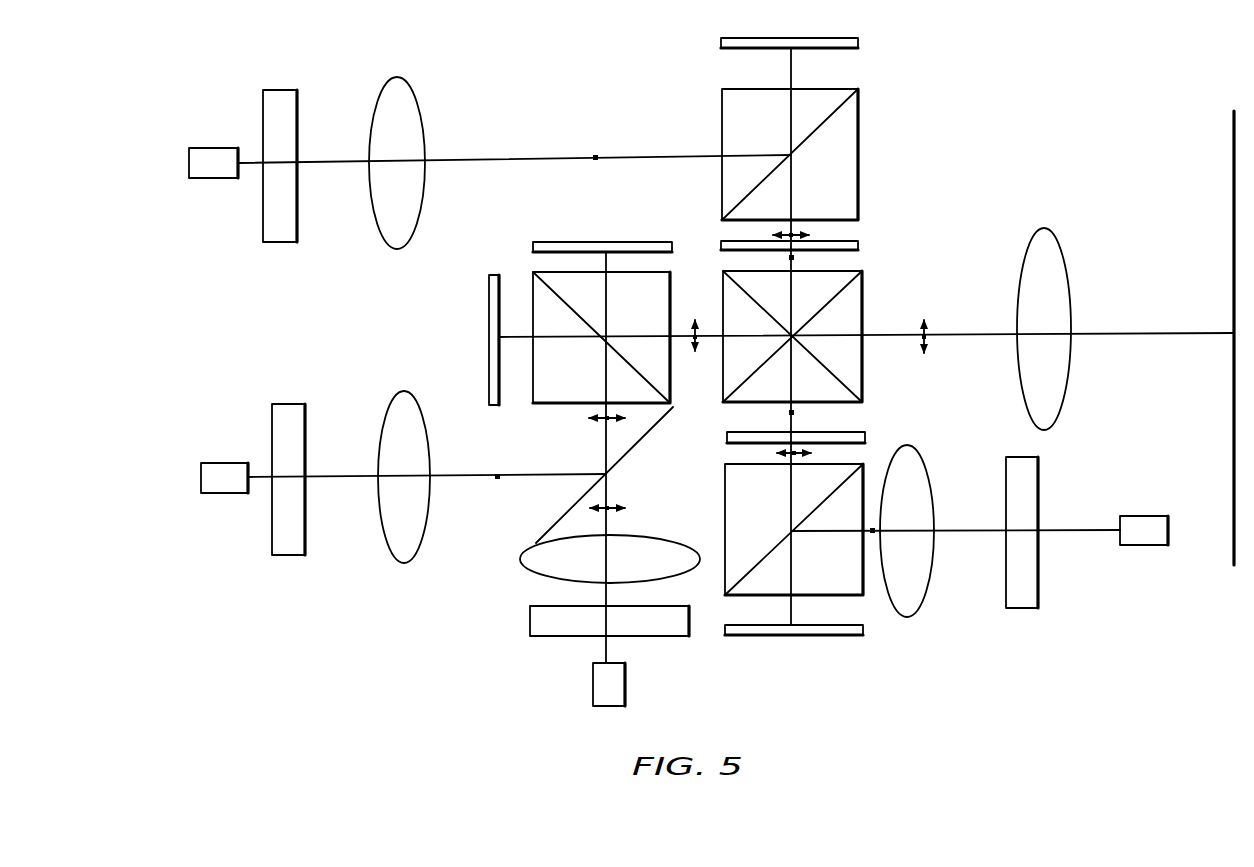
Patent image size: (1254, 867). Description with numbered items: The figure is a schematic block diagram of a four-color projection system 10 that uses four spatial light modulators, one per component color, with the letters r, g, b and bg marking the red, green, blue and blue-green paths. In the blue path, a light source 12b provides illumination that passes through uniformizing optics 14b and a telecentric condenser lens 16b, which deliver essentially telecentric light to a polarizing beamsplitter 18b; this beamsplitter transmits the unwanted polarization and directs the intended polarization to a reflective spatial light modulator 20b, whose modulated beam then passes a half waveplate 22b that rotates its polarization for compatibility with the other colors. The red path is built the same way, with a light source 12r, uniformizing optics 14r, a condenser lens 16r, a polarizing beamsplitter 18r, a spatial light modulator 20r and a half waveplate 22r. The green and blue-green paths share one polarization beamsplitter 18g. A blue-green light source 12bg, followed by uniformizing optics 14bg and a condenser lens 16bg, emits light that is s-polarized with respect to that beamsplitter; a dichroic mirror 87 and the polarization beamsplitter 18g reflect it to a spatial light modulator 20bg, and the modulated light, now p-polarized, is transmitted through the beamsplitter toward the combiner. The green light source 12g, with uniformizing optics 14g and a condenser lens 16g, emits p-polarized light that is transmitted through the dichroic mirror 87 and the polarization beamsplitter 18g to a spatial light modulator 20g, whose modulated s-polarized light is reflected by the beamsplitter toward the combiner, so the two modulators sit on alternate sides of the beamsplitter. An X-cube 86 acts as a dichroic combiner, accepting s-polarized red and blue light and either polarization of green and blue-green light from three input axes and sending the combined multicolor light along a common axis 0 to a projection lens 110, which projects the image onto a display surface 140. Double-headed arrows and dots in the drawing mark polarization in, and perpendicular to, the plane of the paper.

The projection system 10 is at (1086, 70).
The light source 12b is at (215, 148).
The uniformizing optics 14b is at (286, 88).
The telecentric condenser lens 16b is at (397, 77).
The polarizing beamsplitter 18b is at (721, 118).
The spatial light modulator 20b is at (858, 43).
The half waveplate 22b is at (859, 247).
The spatial light modulator 20g is at (595, 241).
The polarization beamsplitter 18g is at (533, 272).
The spatial light modulator 20bg is at (489, 311).
The X-cube 86 is at (862, 298).
The dichroic mirror 87 is at (632, 450).
The common axis 0 is at (985, 333).
The projection lens 110 is at (1068, 378).
The display surface 140 is at (1234, 145).
The blue-green light source 12bg is at (212, 463).
The uniformizing optics 14bg is at (292, 404).
The telecentric condenser lens 16bg is at (390, 400).
The telecentric condenser lens 16g is at (522, 557).
The uniformizing optics 14g is at (530, 626).
The light source 12g is at (593, 683).
The half waveplate 22r is at (728, 433).
The polarizing beamsplitter 18r is at (725, 507).
The spatial light modulator 20r is at (833, 635).
The telecentric condenser lens 16r is at (913, 450).
The uniformizing optics 14r is at (1025, 457).
The light source 12r is at (1143, 516).